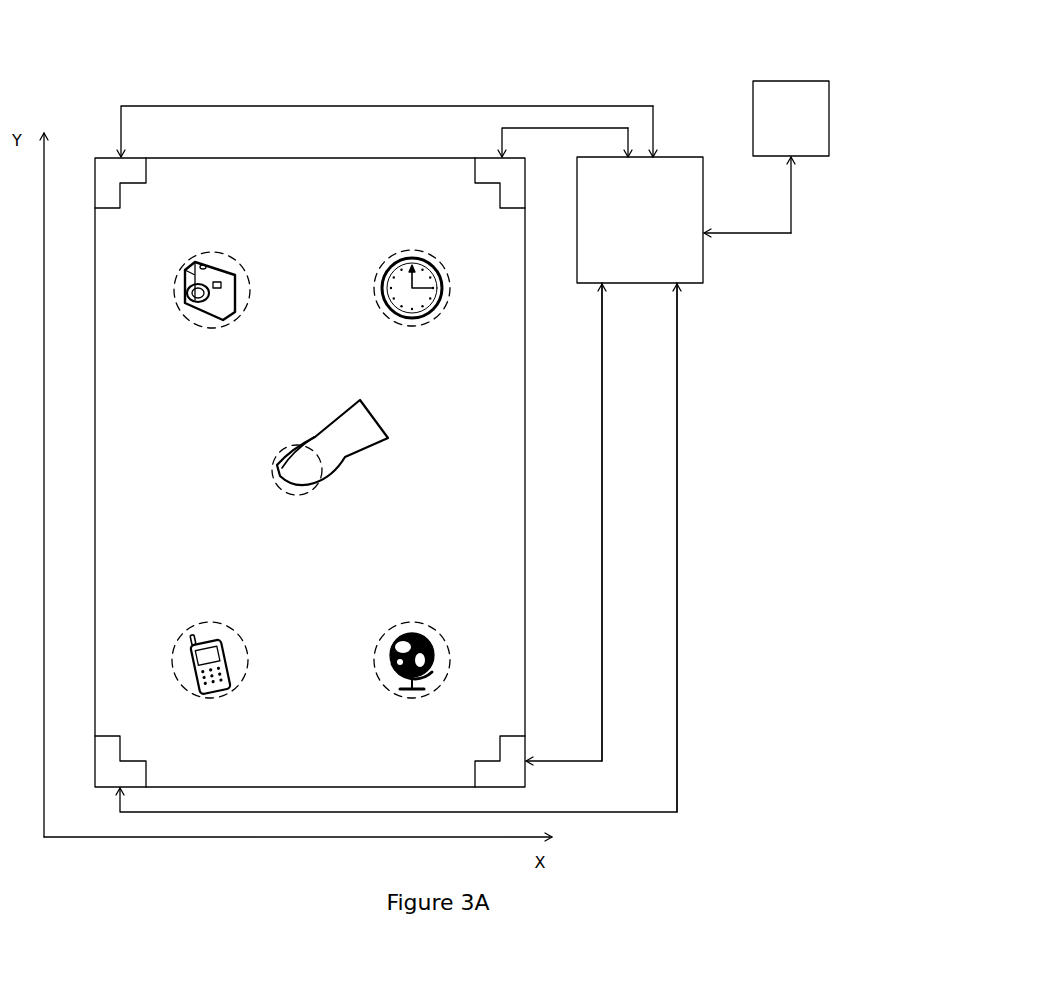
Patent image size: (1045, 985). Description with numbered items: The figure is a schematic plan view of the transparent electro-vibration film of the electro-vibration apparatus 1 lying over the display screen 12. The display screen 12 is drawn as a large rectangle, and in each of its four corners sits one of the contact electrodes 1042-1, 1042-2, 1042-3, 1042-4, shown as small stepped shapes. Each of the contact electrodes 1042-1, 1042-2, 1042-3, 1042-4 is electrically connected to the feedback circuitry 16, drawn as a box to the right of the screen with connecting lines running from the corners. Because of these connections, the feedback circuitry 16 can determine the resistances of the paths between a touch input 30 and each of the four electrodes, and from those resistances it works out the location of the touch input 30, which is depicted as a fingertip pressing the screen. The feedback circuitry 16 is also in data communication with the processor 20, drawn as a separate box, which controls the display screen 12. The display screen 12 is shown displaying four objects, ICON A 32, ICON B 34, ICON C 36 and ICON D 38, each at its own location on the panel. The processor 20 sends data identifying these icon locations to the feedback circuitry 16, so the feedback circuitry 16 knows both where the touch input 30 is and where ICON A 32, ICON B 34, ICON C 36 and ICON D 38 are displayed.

The electro-vibration apparatus 1 is at (310, 406).
The display screen 12 is at (276, 124).
The feedback circuitry 16 is at (678, 157).
The processor 20 is at (803, 81).
The touch input 30 is at (272, 473).
The ICON A 32 is at (208, 252).
The ICON B 34 is at (385, 252).
The ICON C 36 is at (185, 640).
The ICON D 38 is at (437, 634).
The contact electrode 1042-1 is at (513, 746).
The contact electrode 1042-2 is at (517, 167).
The contact electrode 1042-3 is at (112, 164).
The contact electrode 1042-4 is at (105, 770).